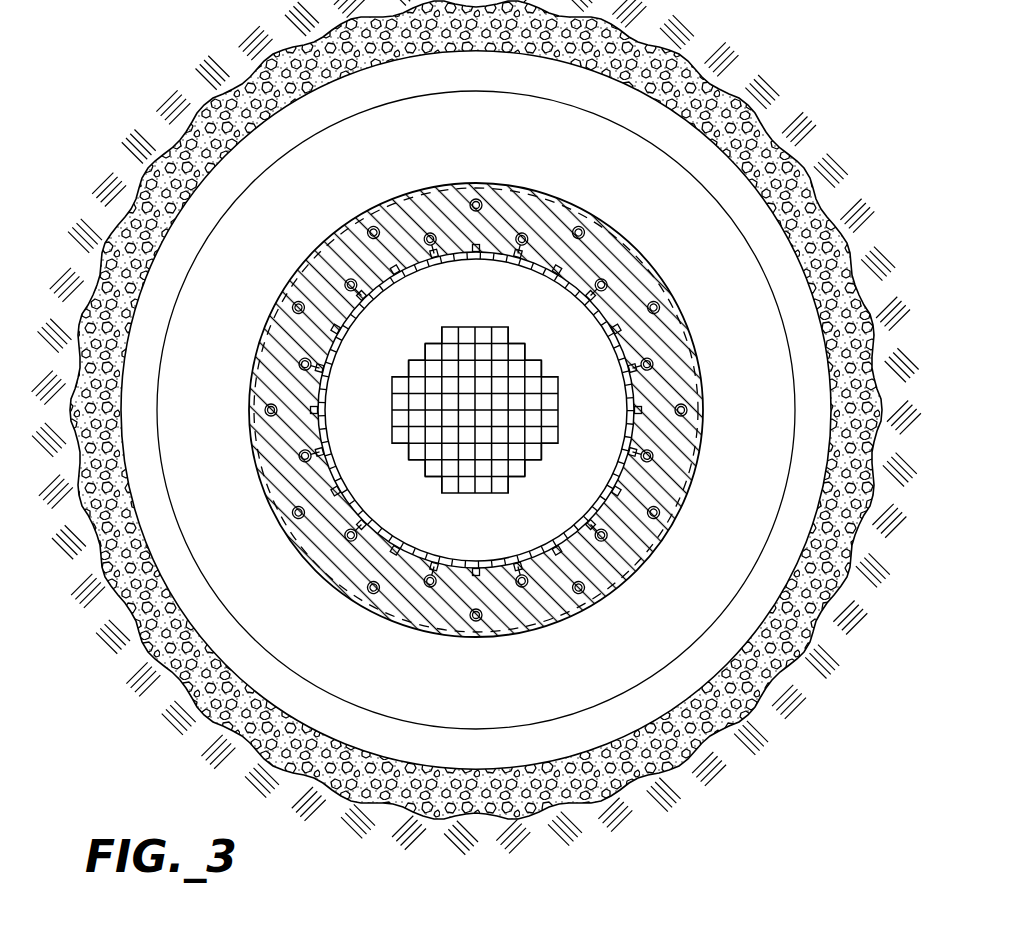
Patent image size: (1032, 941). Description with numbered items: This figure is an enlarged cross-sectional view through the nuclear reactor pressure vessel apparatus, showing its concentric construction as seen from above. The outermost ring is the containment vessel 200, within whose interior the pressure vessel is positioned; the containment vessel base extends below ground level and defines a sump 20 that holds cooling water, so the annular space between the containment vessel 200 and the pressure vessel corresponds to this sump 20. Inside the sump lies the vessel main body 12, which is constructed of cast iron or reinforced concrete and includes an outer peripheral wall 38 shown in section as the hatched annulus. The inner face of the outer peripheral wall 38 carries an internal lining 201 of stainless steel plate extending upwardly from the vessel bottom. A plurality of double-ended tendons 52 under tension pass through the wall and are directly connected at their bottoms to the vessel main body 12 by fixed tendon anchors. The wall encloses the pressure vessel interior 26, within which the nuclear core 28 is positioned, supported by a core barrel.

The containment vessel 200 is at (712, 98).
The vessel main body 12 is at (505, 175).
The sump 20 is at (691, 236).
The internal lining 201 is at (383, 281).
The outer peripheral wall 38 is at (698, 332).
The nuclear core 28 is at (558, 393).
The tendons 52 is at (683, 418).
The pressure vessel interior 26 is at (578, 473).